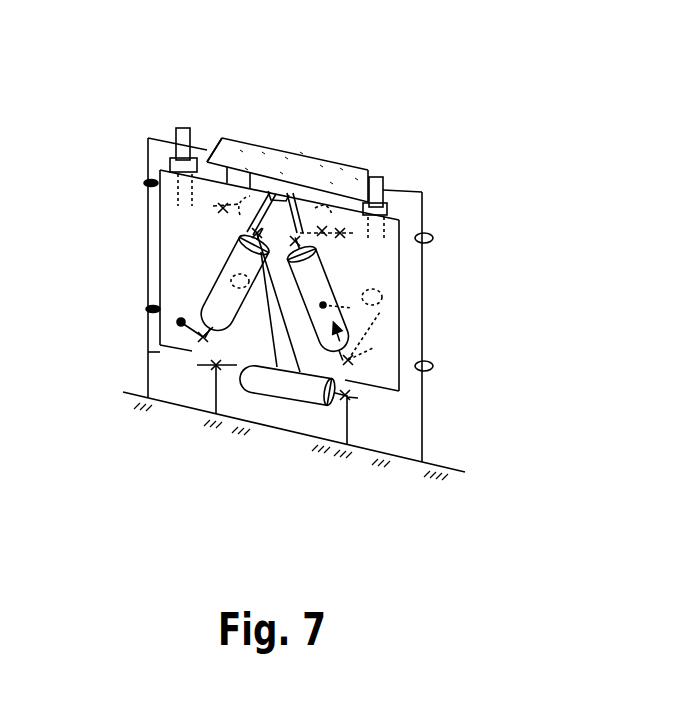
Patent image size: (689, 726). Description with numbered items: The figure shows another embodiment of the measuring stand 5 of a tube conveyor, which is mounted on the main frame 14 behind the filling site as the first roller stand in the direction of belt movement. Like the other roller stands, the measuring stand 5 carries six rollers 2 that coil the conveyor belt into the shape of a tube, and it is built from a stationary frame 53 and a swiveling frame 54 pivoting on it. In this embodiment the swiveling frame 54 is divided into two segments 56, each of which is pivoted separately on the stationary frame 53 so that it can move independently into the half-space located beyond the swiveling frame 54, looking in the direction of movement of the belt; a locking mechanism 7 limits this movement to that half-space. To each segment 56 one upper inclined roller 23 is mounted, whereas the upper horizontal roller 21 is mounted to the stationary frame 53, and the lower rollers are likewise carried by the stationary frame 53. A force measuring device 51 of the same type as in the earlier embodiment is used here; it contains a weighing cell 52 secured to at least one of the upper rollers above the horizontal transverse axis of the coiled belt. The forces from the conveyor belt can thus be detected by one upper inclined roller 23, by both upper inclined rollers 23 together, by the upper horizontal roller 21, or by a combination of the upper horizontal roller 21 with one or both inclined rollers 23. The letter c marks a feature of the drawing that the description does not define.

The rollers 2 is at (350, 360).
The measuring stand 5 is at (187, 122).
The locking mechanism 7 is at (170, 158).
The main frame 14 is at (187, 420).
The upper horizontal roller 21 is at (320, 202).
The upper inclined rollers 23 is at (205, 332).
The force measuring device 51 is at (228, 140).
The weighing cell 52 is at (312, 168).
The stationary frame 53 is at (150, 352).
The swiveling frame 54 is at (242, 236).
The segments 56 is at (195, 262).
The frame columns c is at (148, 212).